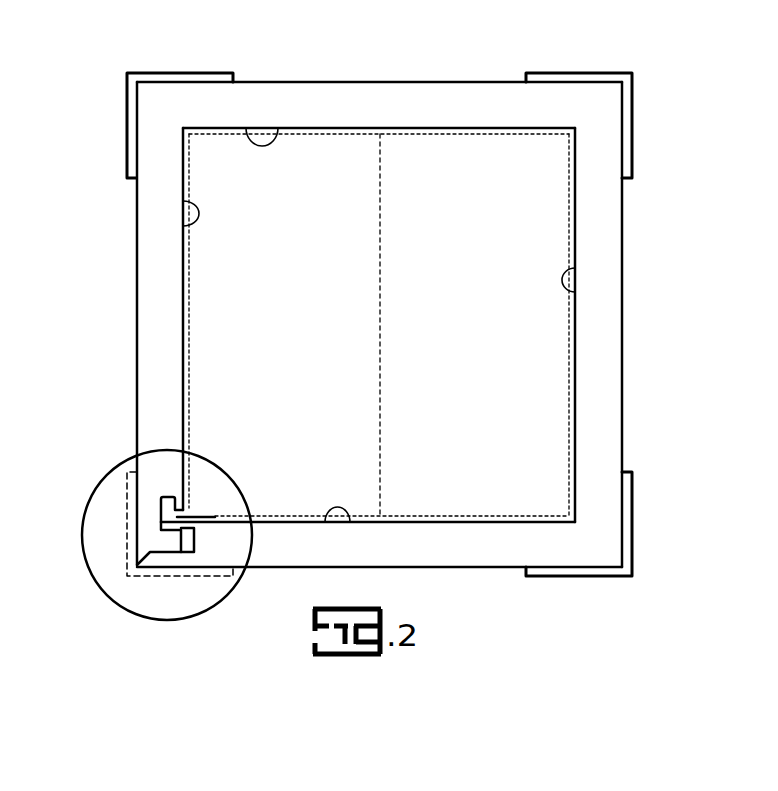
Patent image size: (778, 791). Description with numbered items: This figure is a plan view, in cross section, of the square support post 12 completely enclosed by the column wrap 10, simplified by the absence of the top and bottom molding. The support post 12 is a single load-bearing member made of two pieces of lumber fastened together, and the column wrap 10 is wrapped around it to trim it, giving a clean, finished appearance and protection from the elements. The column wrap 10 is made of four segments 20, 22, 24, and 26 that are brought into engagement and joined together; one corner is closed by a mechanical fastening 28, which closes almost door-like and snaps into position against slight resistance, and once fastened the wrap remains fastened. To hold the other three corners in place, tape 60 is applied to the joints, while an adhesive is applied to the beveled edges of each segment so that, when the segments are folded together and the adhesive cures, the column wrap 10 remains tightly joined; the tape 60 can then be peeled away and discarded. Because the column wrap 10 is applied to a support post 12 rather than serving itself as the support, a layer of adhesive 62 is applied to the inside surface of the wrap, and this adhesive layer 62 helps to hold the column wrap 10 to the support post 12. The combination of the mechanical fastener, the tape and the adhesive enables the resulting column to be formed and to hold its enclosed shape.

The column wrap 10 is at (133, 338).
The support post 12 is at (241, 390).
The segment 20 is at (147, 298).
The segment 22 is at (378, 93).
The segment 24 is at (608, 398).
The segment 26 is at (467, 558).
The mechanical fastening 28 is at (84, 509).
The tape 60 is at (160, 74).
The layer of adhesive 62 is at (277, 130).